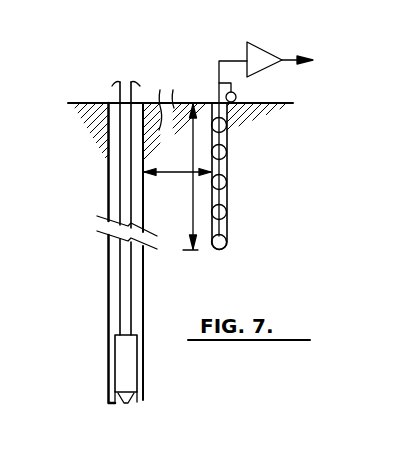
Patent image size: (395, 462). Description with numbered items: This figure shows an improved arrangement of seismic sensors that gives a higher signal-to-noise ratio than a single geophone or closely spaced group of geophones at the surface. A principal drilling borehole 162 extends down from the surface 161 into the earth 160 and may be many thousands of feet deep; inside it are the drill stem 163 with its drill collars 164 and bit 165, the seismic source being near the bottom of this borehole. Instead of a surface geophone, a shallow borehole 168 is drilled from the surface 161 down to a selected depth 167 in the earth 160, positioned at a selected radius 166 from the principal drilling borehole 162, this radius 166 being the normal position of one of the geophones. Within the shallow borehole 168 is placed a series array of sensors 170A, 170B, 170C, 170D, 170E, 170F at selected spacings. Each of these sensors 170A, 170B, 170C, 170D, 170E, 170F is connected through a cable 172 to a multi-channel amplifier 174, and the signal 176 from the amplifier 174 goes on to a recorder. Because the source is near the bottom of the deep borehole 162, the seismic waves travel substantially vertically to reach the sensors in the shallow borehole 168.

The earth 160 is at (70, 157).
The surface 161 is at (81, 103).
The principal drilling borehole 162 is at (108, 248).
The drill stem 163 is at (120, 270).
The drill collars 164 is at (118, 352).
The bit 165 is at (123, 402).
The selected radius 166 is at (182, 175).
The selected depth 167 is at (188, 221).
The shallow borehole 168 is at (227, 167).
The sensor 170A is at (227, 242).
The sensor 170B is at (227, 212).
The sensor 170C is at (227, 182).
The sensor 170D is at (227, 152).
The sensor 170E is at (227, 125).
The sensor 170F is at (237, 94).
The cable 172 is at (219, 67).
The multi-channel amplifier 174 is at (250, 43).
The signal 176 is at (291, 58).